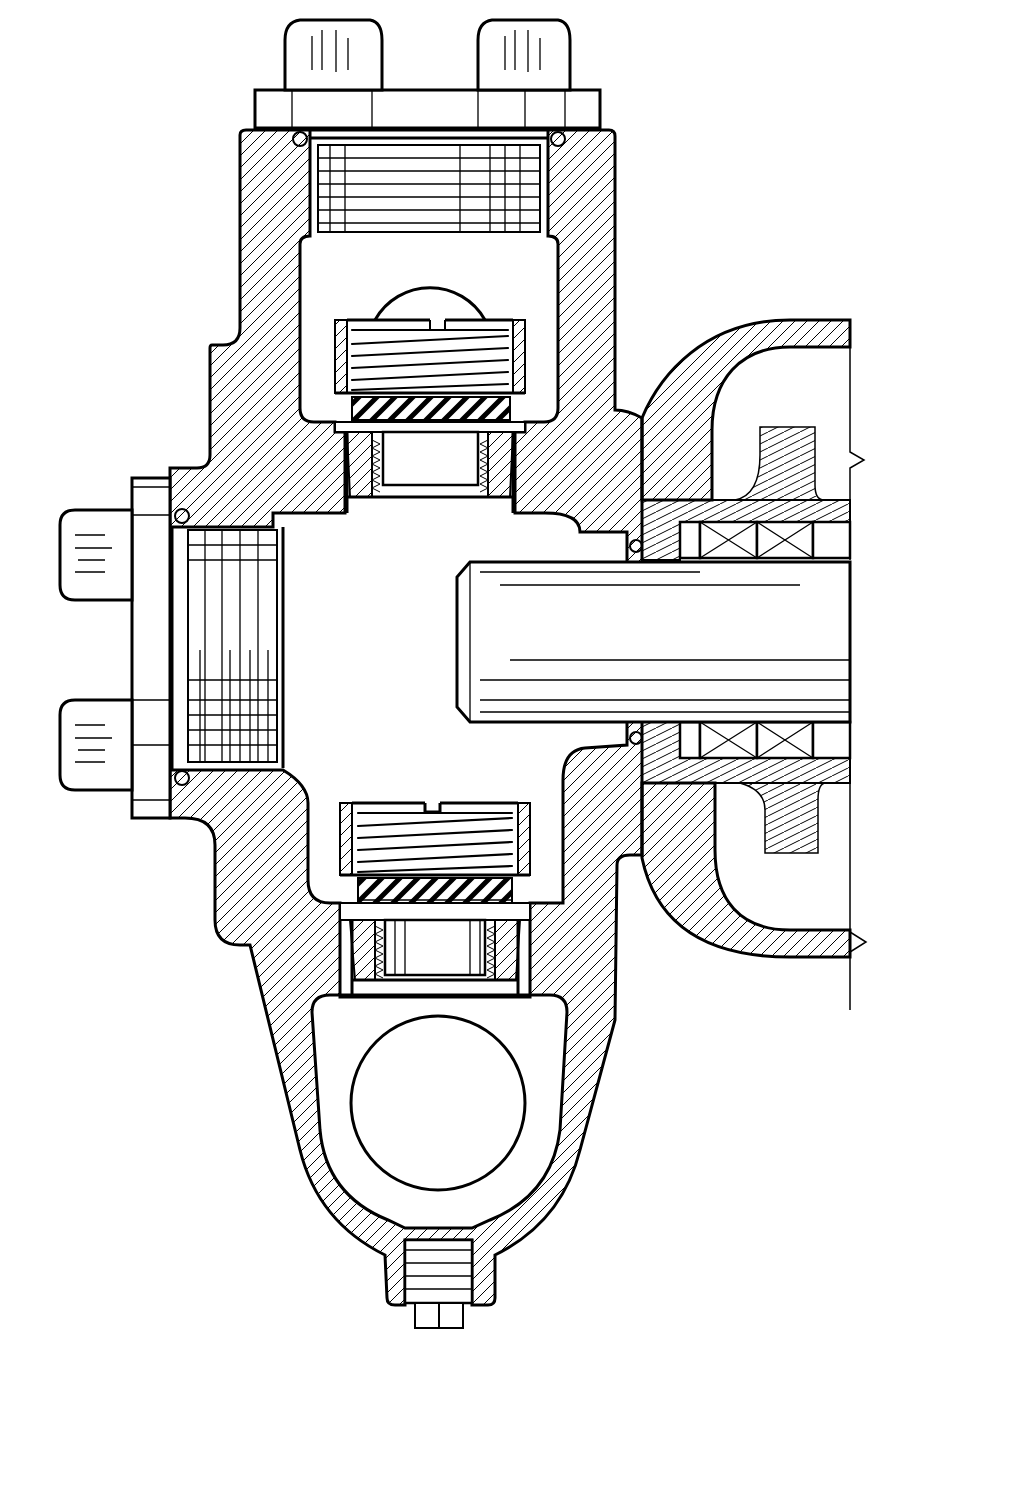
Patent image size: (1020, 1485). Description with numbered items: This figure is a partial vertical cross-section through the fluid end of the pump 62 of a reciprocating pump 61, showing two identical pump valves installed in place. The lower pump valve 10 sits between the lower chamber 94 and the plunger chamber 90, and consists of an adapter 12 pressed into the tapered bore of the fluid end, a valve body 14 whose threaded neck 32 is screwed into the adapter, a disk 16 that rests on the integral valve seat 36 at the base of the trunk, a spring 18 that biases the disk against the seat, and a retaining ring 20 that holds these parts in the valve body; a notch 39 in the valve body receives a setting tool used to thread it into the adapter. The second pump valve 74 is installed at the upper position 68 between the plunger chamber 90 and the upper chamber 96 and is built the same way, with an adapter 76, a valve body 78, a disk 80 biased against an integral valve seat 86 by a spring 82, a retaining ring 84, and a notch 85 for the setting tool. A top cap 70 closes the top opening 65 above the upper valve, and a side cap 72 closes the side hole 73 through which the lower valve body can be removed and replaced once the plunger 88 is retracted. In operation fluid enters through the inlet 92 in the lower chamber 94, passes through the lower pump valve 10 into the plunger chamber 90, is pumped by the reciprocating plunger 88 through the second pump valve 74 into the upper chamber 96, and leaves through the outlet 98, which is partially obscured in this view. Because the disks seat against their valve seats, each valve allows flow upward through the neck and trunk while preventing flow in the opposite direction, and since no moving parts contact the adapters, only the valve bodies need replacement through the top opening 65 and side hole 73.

The pump valve 10 is at (322, 845).
The adapter 12 is at (345, 970).
The valve body 14 is at (340, 823).
The disk 16 is at (513, 890).
The spring 18 is at (530, 848).
The retaining ring 20 is at (358, 803).
The neck 32 is at (375, 935).
The valve seat 36 is at (350, 920).
The notch 39 is at (427, 800).
The pump 61 is at (148, 122).
The fluid end of the pump 62 is at (612, 1078).
The top opening 65 is at (300, 242).
The upper position 68 is at (335, 487).
The top cap 70 is at (590, 105).
The side cap 72 is at (130, 480).
The side hole 73 is at (263, 767).
The second pump valve 74 is at (320, 345).
The adapter 76 is at (334, 472).
The valve body 78 is at (518, 338).
The disk 80 is at (502, 405).
The spring 82 is at (518, 358).
The retaining ring 84 is at (515, 320).
The notch 85 is at (420, 318).
The valve seat 86 is at (332, 442).
The plunger 88 is at (493, 617).
The plunger chamber 90 is at (400, 675).
The inlet 92 is at (520, 1140).
The lower chamber 94 is at (337, 1142).
The upper chamber 96 is at (318, 283).
The outlet 98 is at (465, 292).